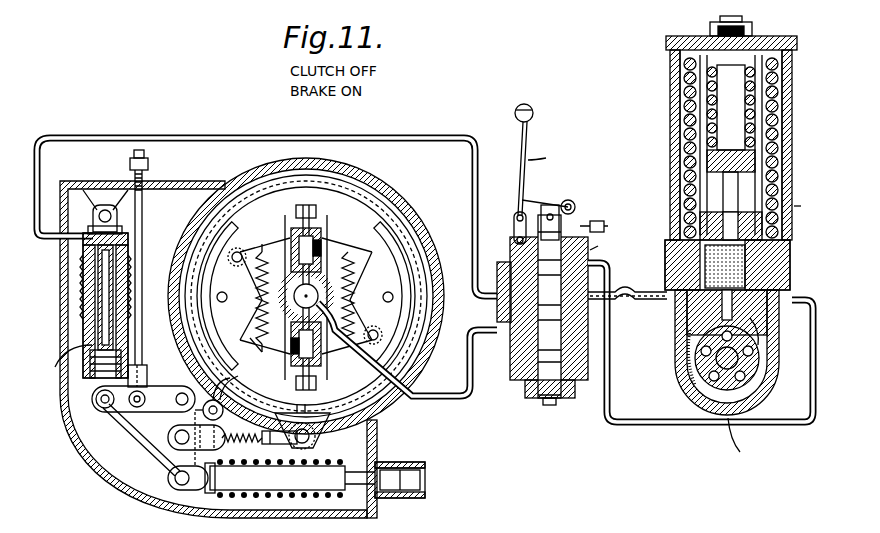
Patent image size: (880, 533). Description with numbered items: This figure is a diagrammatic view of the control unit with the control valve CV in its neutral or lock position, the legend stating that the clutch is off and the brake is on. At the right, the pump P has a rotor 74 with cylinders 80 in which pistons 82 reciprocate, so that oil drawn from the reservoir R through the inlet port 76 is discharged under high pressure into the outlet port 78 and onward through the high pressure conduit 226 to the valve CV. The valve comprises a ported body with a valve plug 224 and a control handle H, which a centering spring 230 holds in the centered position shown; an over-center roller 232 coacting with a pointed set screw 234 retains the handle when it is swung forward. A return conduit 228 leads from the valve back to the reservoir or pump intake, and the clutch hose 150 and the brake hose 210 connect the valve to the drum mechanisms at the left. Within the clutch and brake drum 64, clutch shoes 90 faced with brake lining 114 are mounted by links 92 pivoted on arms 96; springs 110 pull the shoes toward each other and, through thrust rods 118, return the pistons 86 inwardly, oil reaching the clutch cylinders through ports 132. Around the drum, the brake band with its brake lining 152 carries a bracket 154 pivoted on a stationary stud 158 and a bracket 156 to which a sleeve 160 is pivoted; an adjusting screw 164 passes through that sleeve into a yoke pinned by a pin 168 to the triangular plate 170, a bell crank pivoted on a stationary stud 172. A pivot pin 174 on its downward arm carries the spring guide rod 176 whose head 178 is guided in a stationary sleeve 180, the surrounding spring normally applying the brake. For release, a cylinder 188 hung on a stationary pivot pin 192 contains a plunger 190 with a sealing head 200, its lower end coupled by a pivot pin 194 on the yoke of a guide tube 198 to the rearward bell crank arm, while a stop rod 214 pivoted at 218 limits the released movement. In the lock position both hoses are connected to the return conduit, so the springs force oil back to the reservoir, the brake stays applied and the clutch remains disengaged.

The hose 210 is at (122, 139).
The stationary pivot pin 192 is at (105, 210).
The stop rod 214 is at (143, 211).
The head 200 is at (118, 262).
The plunger 190 is at (100, 335).
The guide tube 198 is at (61, 362).
The cylinder 188 is at (93, 358).
The bracket 154 is at (205, 383).
The stationary stud 172 is at (176, 399).
The stud 158 is at (203, 410).
The pivot pin 194 is at (102, 409).
The pivot 218 is at (137, 407).
The pin 168 is at (175, 438).
The triangular plate 170 is at (142, 443).
The pivot pin 174 is at (175, 481).
The adjusting screw 164 is at (233, 445).
The sleeve 160 is at (268, 445).
The spring guide rod 176 is at (290, 478).
The bracket 156 is at (365, 432).
The stationary sleeve 180 is at (405, 462).
The head 178 is at (422, 484).
The hose 150 is at (455, 396).
The valve plug 224 is at (520, 350).
The centering spring 230 is at (549, 398).
The springs 110 is at (268, 256).
The thrust rod 118 is at (312, 214).
The piston 86 is at (316, 246).
The arms 96 is at (352, 296).
The links 92 is at (306, 296).
The ports 132 is at (250, 346).
The clutch shoes 90 is at (380, 232).
The brake lining 114 is at (392, 252).
The clutch and brake drum 64 is at (418, 285).
The brake lining 152 is at (416, 319).
The over-center roller 232 is at (576, 204).
The pointed set screw 234 is at (600, 224).
The high pressure conduit 226 is at (625, 290).
The return conduit 228 is at (610, 418).
The outlet port 78 is at (680, 373).
The rotor 74 is at (695, 385).
The pistons 82 is at (705, 400).
The inlet port 76 is at (752, 378).
The cylinders 80 is at (742, 400).
The control handle H is at (531, 154).
The control valve CV is at (604, 242).
The reservoir R is at (739, 128).
The pump P is at (727, 352).